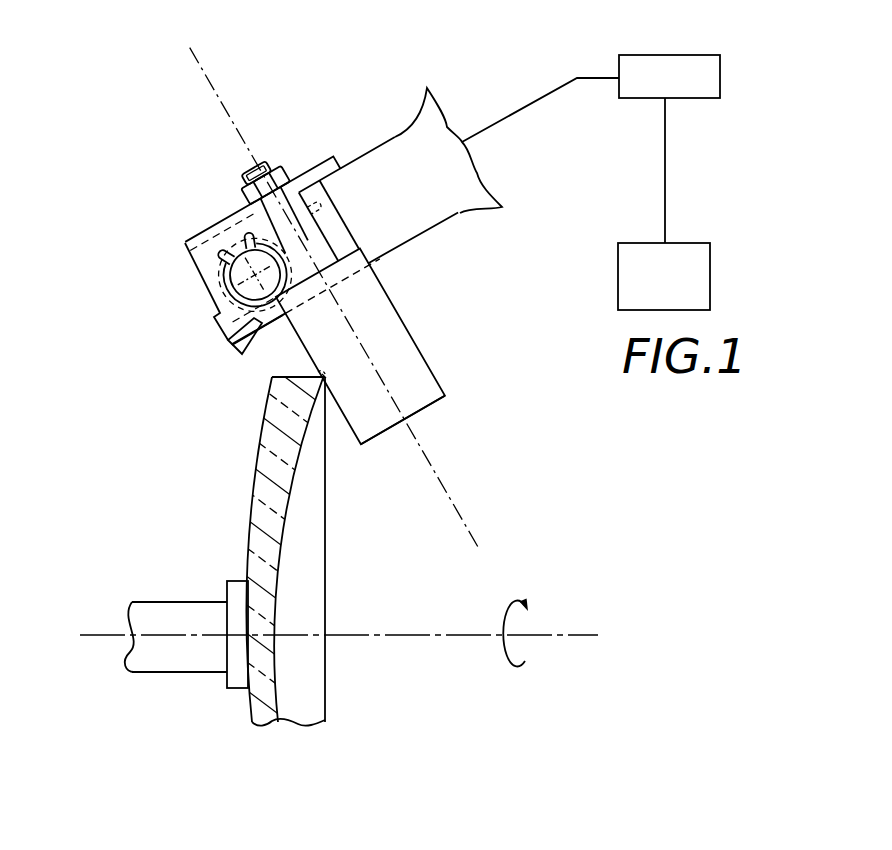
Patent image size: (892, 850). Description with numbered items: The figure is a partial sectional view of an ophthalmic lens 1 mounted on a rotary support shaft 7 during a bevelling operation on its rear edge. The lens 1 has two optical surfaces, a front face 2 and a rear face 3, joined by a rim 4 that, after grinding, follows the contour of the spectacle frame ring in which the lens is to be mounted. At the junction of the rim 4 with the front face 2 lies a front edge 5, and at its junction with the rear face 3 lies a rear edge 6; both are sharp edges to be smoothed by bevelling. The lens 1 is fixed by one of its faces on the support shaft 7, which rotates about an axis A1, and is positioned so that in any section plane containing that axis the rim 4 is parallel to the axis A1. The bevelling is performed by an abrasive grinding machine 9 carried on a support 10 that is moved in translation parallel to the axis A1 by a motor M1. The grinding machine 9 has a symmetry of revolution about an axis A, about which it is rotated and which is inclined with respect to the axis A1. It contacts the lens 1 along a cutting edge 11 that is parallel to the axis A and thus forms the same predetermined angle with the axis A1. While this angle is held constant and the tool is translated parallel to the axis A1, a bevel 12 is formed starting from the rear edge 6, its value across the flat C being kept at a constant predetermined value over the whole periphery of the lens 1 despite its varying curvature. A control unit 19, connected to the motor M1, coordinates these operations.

The ophthalmic lens 1 is at (246, 477).
The front face 2 is at (250, 514).
The rear face 3 is at (282, 517).
The rim 4 is at (295, 374).
The front edge 5 is at (272, 377).
The rear edge 6 is at (324, 378).
The support shaft 7 is at (168, 608).
The abrasive grinding machine 9 is at (408, 354).
The support 10 is at (368, 152).
The cutting edge 11 is at (357, 448).
The bevel 12 is at (328, 380).
The control unit 19 is at (678, 291).
The motor M1 is at (648, 84).
The axis of the grinding machine A is at (475, 517).
The axis of the support shaft A1 is at (93, 635).
The value across the flat of the bevel C is at (515, 632).